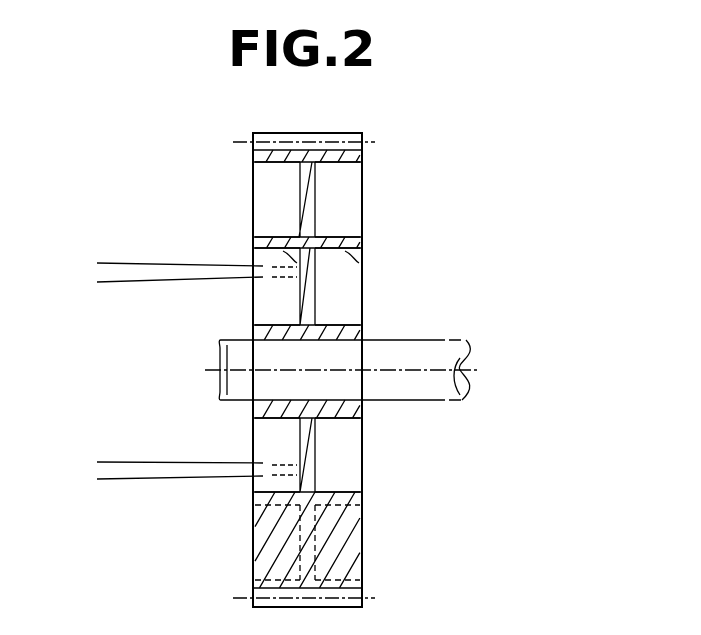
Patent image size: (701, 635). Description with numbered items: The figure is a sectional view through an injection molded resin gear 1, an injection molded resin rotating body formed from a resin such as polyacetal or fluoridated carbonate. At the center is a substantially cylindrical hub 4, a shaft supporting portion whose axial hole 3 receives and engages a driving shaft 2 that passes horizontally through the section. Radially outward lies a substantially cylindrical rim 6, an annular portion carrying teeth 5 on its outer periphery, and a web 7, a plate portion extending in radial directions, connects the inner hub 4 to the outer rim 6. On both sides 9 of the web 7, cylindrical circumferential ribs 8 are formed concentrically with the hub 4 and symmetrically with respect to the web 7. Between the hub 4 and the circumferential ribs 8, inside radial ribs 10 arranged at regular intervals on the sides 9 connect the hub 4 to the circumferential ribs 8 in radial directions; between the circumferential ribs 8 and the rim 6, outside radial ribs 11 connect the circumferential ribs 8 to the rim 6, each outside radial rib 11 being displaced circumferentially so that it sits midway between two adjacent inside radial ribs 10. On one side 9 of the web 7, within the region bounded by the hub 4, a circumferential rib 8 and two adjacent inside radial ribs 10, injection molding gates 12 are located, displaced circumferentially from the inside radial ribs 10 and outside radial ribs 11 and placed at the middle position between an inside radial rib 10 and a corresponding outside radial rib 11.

The injection molded resin gear 1 is at (402, 189).
The driving shaft 2 is at (425, 340).
The axial hole 3 is at (345, 400).
The hub 4 is at (257, 330).
The teeth 5 is at (300, 133).
The rim 6 is at (258, 156).
The web 7 is at (308, 205).
The circumferential ribs 8 is at (300, 271).
The sides of the web 9 is at (297, 306).
The inside radial ribs 10 is at (264, 289).
The outside radial ribs 11 is at (253, 190).
The injection molding gates 12 is at (119, 276).